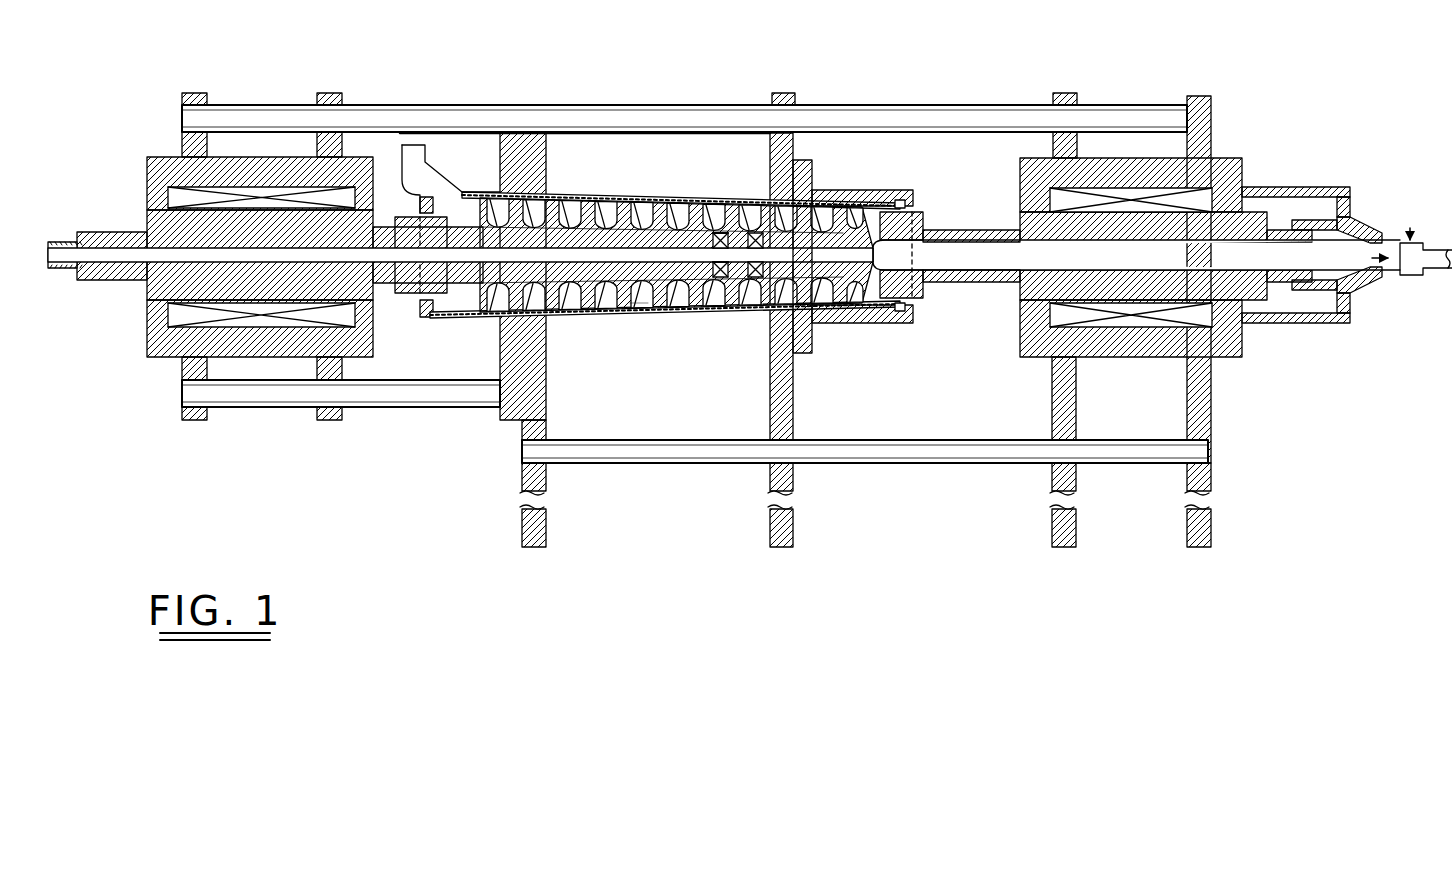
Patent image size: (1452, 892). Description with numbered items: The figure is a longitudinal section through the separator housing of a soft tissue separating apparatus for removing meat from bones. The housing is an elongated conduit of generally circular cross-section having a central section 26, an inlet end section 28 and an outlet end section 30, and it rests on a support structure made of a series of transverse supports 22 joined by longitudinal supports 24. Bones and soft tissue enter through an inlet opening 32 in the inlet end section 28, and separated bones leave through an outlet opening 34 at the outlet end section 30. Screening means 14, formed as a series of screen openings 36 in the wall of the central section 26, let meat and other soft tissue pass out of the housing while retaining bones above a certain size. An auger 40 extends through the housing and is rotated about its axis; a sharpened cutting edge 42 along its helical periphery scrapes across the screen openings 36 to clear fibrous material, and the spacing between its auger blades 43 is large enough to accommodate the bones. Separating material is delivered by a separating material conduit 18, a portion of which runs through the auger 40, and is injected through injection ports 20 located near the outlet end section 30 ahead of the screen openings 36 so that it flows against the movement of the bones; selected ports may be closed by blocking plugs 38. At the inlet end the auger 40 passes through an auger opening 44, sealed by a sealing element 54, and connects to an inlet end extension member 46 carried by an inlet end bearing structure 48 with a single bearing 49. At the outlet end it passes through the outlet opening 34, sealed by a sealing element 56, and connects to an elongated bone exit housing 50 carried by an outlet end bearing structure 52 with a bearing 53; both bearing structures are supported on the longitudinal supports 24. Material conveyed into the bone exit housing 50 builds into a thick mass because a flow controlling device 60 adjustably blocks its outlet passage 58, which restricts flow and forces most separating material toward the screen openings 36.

The screening means 14 is at (660, 197).
The separating material conduit 18 is at (158, 253).
The injection ports 20 is at (757, 233).
The transverse supports 22 is at (1211, 118).
The longitudinal supports 24 is at (1110, 113).
The central section 26 is at (640, 187).
The inlet end section 28 is at (480, 183).
The outlet end section 30 is at (850, 187).
The inlet opening 32 is at (415, 160).
The outlet opening 34 is at (912, 220).
The screen openings 36 is at (600, 318).
The blocking plugs 38 is at (725, 233).
The auger 40 is at (582, 197).
The sharpened cutting edge 42 is at (627, 200).
The auger blades 43 is at (630, 303).
The auger opening 44 is at (417, 290).
The inlet end extension member 46 is at (213, 227).
The inlet end bearing structure 48 is at (180, 165).
The bearing 49 is at (178, 322).
The bone exit housing 50 is at (995, 282).
The outlet end bearing structure 52 is at (1227, 170).
The bearing 53 is at (1168, 315).
The sealing element 54 is at (422, 318).
The sealing element 56 is at (900, 305).
The outlet passage 58 is at (1347, 257).
The flow controlling device 60 is at (1432, 252).